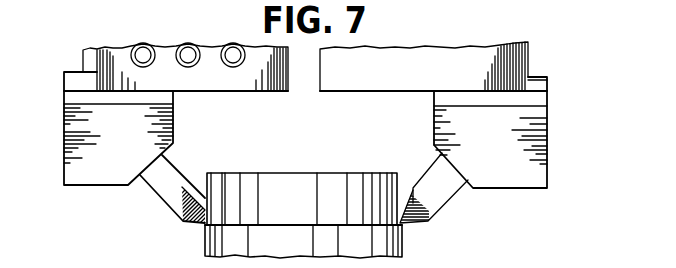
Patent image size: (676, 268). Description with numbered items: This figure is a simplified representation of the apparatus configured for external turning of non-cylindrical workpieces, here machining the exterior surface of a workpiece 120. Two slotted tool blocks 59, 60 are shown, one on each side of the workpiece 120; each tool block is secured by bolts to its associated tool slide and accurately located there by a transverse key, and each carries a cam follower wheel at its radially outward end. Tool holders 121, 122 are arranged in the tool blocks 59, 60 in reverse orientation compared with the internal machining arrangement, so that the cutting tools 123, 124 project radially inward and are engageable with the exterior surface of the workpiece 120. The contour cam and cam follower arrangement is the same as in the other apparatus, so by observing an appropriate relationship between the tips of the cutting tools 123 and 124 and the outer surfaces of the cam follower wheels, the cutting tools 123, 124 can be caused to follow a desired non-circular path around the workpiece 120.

The slotted tool block 59 is at (110, 59).
The slotted tool block 60 is at (508, 71).
The workpiece 120 is at (287, 182).
The tool holder 121 is at (153, 114).
The tool holder 122 is at (451, 118).
The cutting tool 123 is at (167, 189).
The cutting tool 124 is at (431, 190).